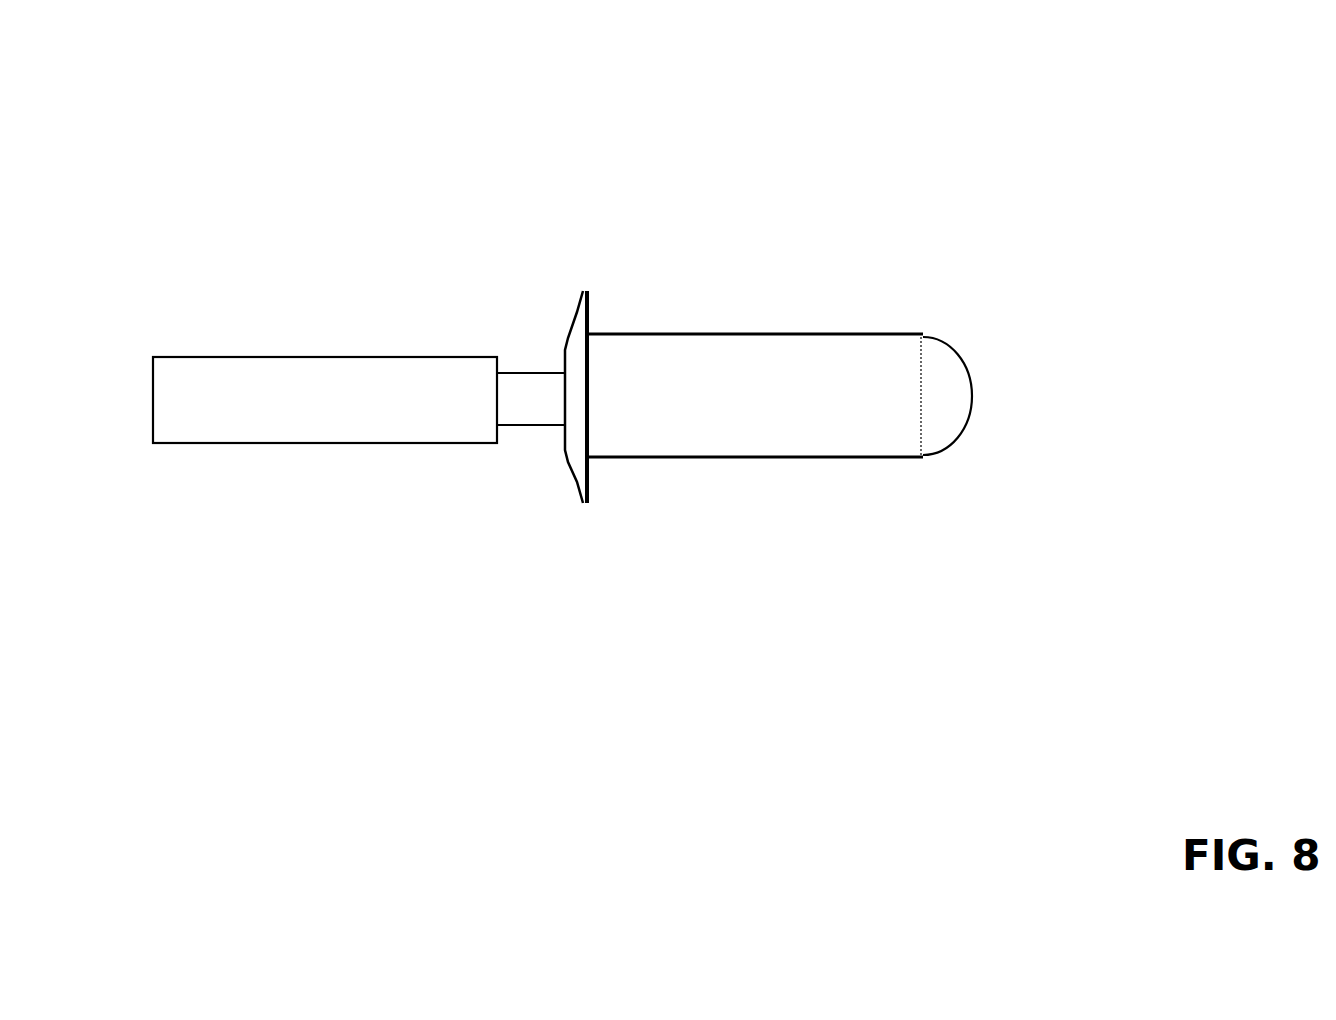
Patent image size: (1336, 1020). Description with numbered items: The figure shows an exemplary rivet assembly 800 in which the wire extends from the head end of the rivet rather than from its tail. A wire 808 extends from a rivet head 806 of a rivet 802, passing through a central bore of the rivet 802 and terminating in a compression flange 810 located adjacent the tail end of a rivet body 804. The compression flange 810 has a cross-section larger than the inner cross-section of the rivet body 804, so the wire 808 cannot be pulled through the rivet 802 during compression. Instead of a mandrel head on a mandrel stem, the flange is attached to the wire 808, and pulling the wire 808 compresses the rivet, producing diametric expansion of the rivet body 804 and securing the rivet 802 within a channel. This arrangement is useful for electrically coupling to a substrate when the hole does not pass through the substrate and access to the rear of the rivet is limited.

The rivet assembly 800 is at (793, 118).
The rivet 802 is at (684, 314).
The rivet body 804 is at (800, 334).
The rivet head 806 is at (583, 291).
The wire 808 is at (403, 357).
The compression flange 810 is at (978, 393).